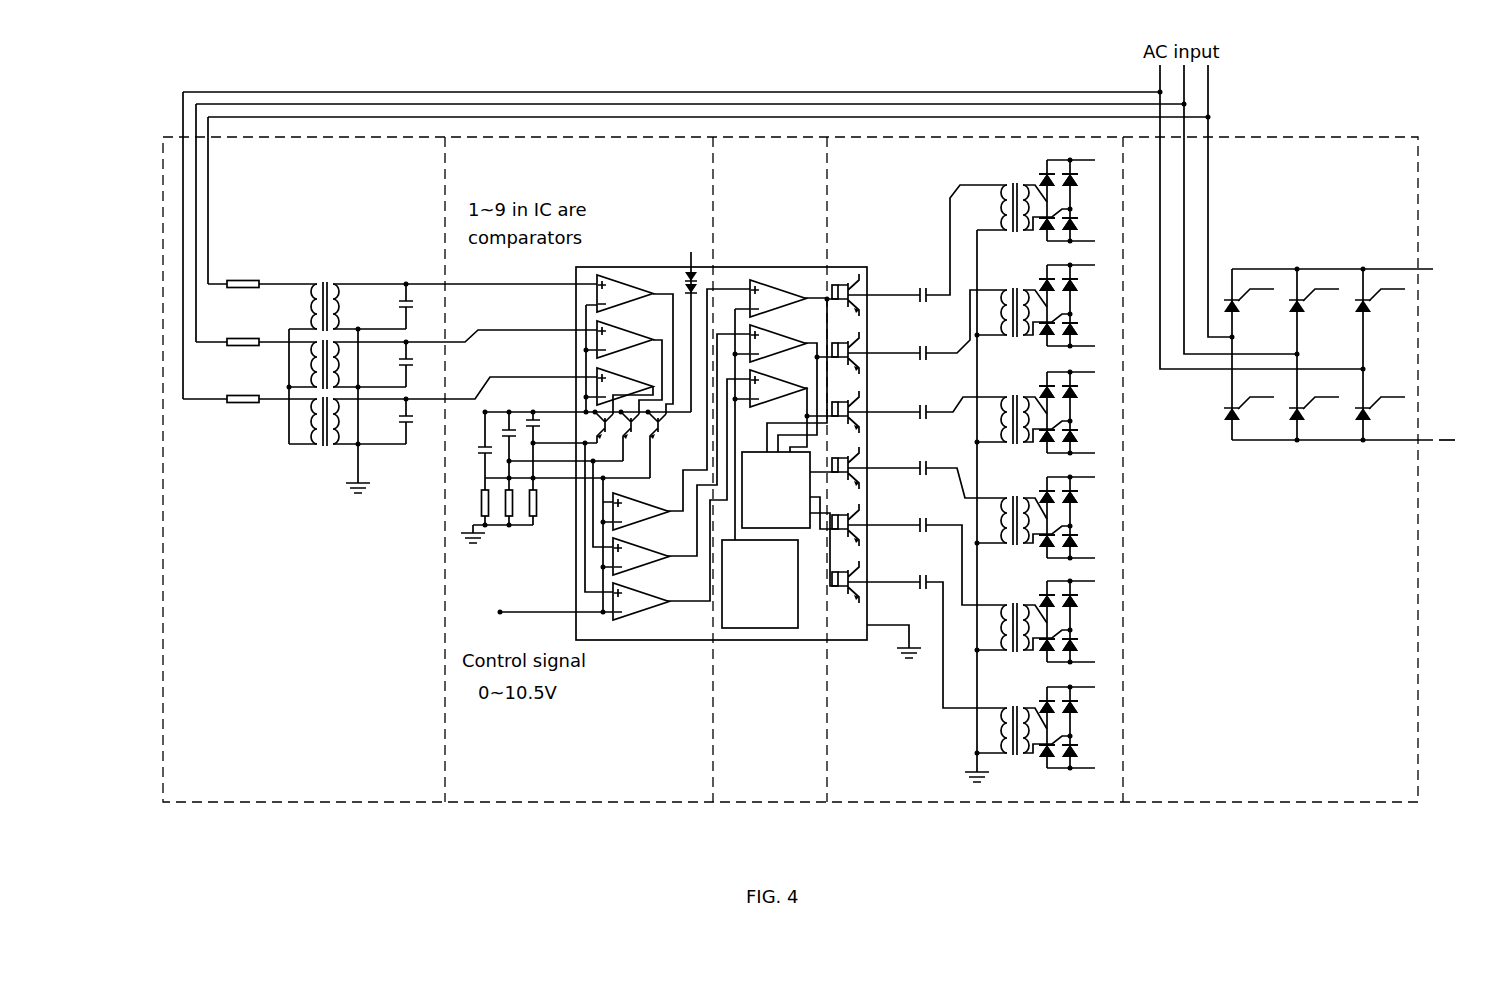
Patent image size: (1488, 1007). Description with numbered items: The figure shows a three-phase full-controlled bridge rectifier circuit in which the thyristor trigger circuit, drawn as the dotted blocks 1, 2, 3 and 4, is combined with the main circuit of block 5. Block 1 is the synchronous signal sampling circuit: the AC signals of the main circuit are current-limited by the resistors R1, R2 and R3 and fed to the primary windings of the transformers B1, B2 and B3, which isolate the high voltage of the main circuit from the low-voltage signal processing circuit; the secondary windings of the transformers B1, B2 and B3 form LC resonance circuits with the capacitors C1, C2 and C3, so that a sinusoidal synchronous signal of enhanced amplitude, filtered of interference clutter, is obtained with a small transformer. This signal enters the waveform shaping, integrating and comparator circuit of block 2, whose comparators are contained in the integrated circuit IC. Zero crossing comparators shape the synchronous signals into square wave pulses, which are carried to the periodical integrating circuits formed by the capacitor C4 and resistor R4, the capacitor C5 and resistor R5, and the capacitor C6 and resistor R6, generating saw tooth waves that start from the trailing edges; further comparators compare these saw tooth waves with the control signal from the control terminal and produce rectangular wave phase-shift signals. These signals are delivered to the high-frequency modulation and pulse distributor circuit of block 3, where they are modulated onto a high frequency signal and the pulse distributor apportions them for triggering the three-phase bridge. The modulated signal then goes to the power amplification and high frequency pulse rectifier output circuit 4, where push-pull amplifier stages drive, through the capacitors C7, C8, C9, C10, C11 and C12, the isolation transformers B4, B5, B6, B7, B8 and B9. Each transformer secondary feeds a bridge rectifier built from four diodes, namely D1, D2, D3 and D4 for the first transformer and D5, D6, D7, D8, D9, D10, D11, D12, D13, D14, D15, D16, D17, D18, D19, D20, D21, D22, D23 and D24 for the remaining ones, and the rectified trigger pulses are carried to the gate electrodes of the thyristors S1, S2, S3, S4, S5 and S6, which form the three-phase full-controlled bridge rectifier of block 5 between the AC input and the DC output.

The synchronous signal sampling circuit 1 is at (390, 560).
The waveform shaping, integrating and comparator circuit 2 is at (602, 547).
The high-frequency modulation and pulse distributor circuit 3 is at (775, 743).
The power amplification and high frequency pulse rectifier output circuit 4 is at (973, 506).
The three-phase full-controlled bridge rectifier circuit 5 is at (1346, 552).
The integrated circuit IC is at (721, 436).
The resistor R1 is at (262, 273).
The resistor R2 is at (256, 331).
The resistor R3 is at (250, 388).
The resistor R4 is at (474, 501).
The resistor R5 is at (511, 515).
The resistor R6 is at (546, 501).
The transformer B1 is at (307, 306).
The transformer B2 is at (302, 364).
The transformer B3 is at (302, 421).
The pulse transformer B4 is at (1006, 207).
The pulse transformer B5 is at (1006, 312).
The pulse transformer B6 is at (1006, 419).
The pulse transformer B7 is at (1006, 520).
The pulse transformer B8 is at (1006, 627).
The pulse transformer B9 is at (1006, 730).
The capacitor C1 is at (421, 306).
The capacitor C2 is at (421, 364).
The capacitor C3 is at (421, 421).
The capacitor C4 is at (473, 445).
The capacitor C5 is at (519, 445).
The capacitor C6 is at (548, 445).
The coupling capacitor C7 is at (952, 243).
The coupling capacitor C8 is at (952, 325).
The coupling capacitor C9 is at (952, 404).
The coupling capacitor C10 is at (947, 471).
The coupling capacitor C11 is at (947, 553).
The coupling capacitor C12 is at (947, 633).
The diode D1 is at (1036, 168).
The diode D2 is at (1082, 183).
The diode D3 is at (1036, 237).
The diode D4 is at (1082, 223).
The diode D5 is at (1082, 328).
The diode D6 is at (1036, 342).
The diode D7 is at (1082, 288).
The diode D8 is at (1036, 273).
The diode D9 is at (1082, 435).
The diode D10 is at (1030, 449).
The diode D11 is at (1088, 395).
The diode D12 is at (1030, 380).
The diode D13 is at (1088, 540).
The diode D14 is at (1030, 554).
The diode D15 is at (1088, 500).
The diode D16 is at (1030, 485).
The diode D17 is at (1088, 644).
The diode D18 is at (1030, 658).
The diode D19 is at (1088, 604).
The diode D20 is at (1030, 589).
The diode D21 is at (1088, 750).
The diode D22 is at (1030, 764).
The diode D23 is at (1088, 710).
The diode D24 is at (1030, 695).
The thyristor S1 is at (1256, 277).
The thyristor S2 is at (1321, 277).
The thyristor S3 is at (1387, 277).
The thyristor S4 is at (1252, 431).
The thyristor S5 is at (1321, 429).
The thyristor S6 is at (1385, 429).